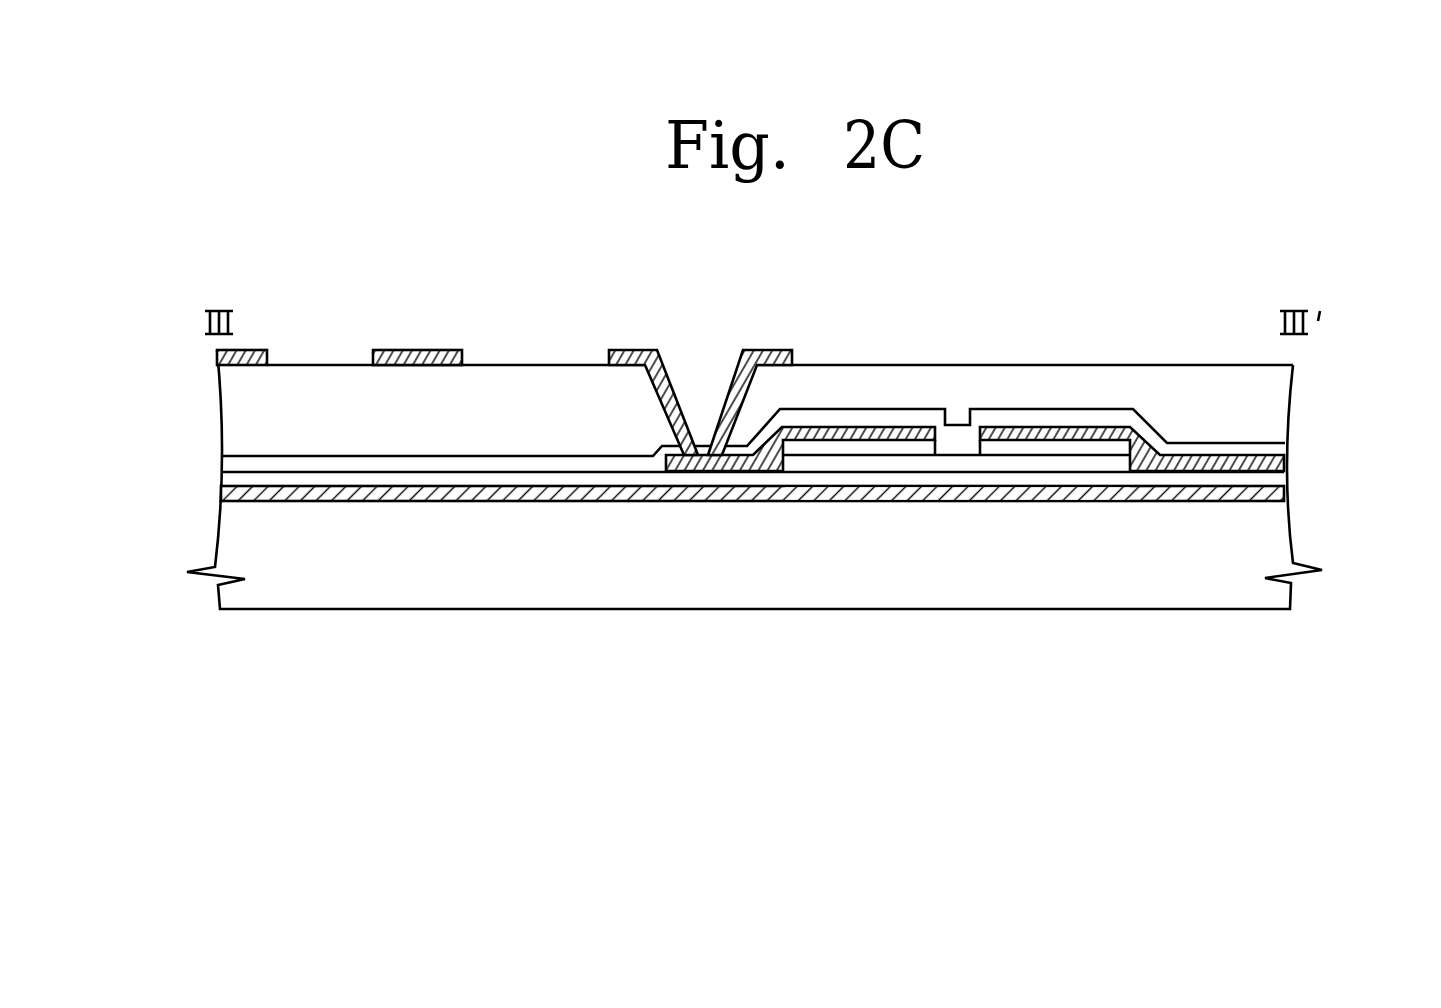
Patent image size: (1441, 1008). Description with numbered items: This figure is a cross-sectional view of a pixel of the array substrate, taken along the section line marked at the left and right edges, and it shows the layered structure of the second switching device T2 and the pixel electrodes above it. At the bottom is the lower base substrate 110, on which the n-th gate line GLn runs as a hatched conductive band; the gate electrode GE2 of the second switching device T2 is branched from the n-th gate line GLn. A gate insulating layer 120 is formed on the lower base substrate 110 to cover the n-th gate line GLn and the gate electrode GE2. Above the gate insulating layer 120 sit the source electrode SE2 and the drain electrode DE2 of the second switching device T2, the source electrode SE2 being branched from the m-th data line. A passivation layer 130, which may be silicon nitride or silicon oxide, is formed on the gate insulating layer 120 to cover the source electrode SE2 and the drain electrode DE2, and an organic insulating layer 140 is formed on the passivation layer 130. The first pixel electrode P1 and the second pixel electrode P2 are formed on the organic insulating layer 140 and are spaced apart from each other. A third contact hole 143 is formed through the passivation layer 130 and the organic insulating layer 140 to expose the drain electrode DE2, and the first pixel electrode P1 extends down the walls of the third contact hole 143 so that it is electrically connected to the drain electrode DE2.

The lower base substrate 110 is at (1282, 522).
The gate insulating layer 120 is at (225, 478).
The passivation layer 130 is at (1283, 444).
The organic insulating layer 140 is at (237, 402).
The third contact hole 143 is at (702, 360).
The first pixel electrode P1 is at (637, 352).
The second pixel electrode P2 is at (417, 352).
The n-th gate line GLn is at (468, 502).
The gate electrode GE2 is at (958, 503).
The drain electrode DE2 is at (772, 472).
The source electrode SE2 is at (1142, 470).
The second switching device T2 is at (1165, 685).